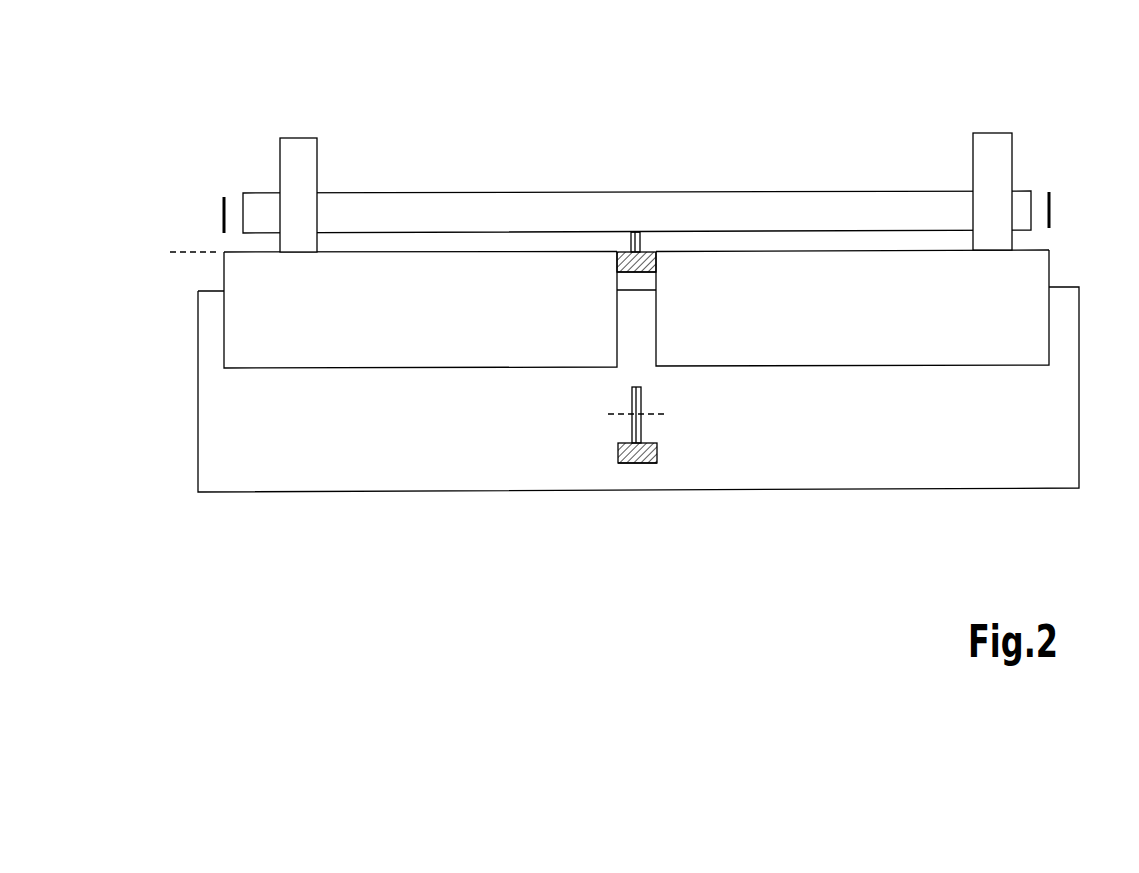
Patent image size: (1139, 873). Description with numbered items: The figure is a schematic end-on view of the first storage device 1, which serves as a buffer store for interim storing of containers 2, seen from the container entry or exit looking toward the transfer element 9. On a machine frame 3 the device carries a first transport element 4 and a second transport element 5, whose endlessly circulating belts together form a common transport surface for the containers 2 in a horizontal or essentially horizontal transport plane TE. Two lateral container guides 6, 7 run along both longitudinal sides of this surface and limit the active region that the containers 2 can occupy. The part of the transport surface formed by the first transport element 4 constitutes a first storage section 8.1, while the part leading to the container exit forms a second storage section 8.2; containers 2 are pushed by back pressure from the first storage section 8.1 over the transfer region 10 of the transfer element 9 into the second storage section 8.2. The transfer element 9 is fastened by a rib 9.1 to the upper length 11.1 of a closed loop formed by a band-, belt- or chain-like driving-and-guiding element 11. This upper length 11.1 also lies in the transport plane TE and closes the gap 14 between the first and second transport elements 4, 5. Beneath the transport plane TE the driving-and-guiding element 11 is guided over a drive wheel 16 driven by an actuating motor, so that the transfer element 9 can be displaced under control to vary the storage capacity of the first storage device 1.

The first storage device 1 is at (967, 83).
The containers 2 is at (298, 157).
The machine frame 3 is at (327, 463).
The first transport element 4 is at (855, 321).
The second transport element 5 is at (375, 324).
The lateral container guide 6 is at (1052, 197).
The lateral container guide 7 is at (220, 200).
The first storage section 8.1 is at (842, 249).
The second storage section 8.2 is at (467, 252).
The transfer element 9 is at (400, 193).
The rib 9.1 is at (637, 235).
The transfer region 10 is at (362, 203).
The driving-and-guiding element 11 is at (647, 249).
The upper length 11.1 is at (647, 272).
The gap 14 is at (637, 318).
The drive wheel 16 is at (640, 425).
The transport plane TE is at (172, 246).